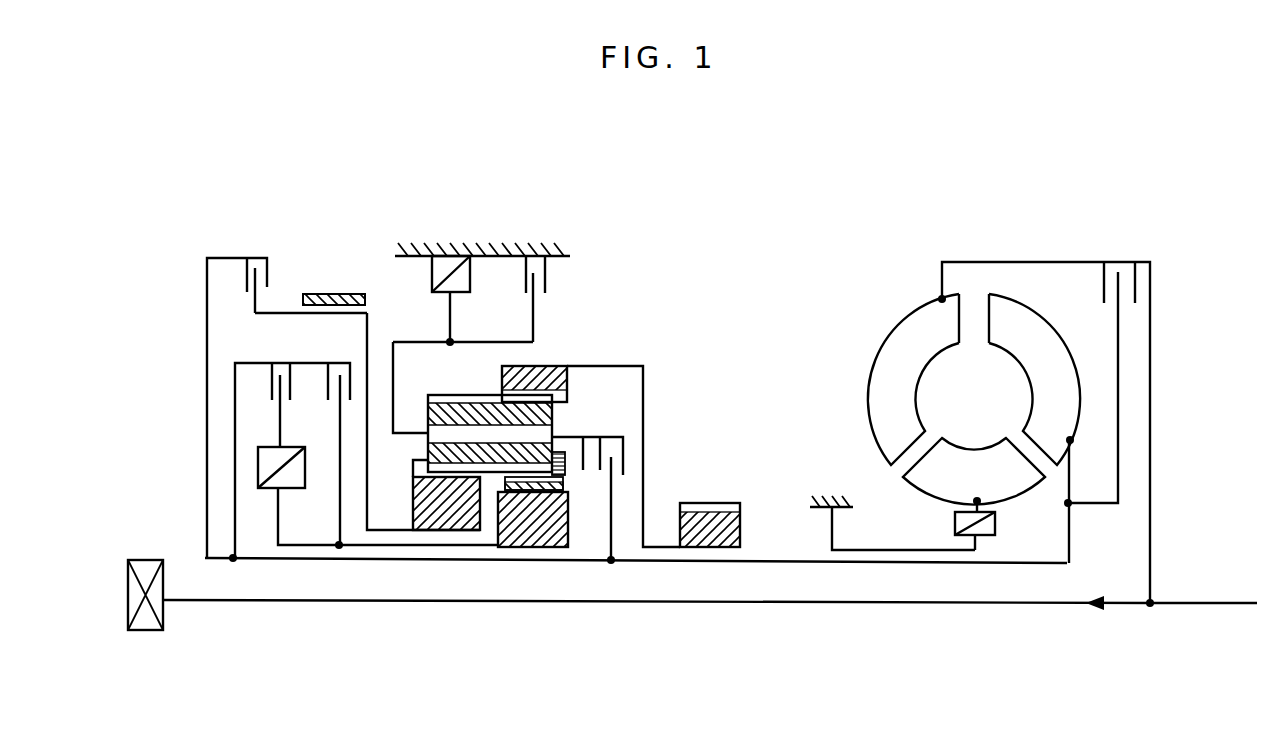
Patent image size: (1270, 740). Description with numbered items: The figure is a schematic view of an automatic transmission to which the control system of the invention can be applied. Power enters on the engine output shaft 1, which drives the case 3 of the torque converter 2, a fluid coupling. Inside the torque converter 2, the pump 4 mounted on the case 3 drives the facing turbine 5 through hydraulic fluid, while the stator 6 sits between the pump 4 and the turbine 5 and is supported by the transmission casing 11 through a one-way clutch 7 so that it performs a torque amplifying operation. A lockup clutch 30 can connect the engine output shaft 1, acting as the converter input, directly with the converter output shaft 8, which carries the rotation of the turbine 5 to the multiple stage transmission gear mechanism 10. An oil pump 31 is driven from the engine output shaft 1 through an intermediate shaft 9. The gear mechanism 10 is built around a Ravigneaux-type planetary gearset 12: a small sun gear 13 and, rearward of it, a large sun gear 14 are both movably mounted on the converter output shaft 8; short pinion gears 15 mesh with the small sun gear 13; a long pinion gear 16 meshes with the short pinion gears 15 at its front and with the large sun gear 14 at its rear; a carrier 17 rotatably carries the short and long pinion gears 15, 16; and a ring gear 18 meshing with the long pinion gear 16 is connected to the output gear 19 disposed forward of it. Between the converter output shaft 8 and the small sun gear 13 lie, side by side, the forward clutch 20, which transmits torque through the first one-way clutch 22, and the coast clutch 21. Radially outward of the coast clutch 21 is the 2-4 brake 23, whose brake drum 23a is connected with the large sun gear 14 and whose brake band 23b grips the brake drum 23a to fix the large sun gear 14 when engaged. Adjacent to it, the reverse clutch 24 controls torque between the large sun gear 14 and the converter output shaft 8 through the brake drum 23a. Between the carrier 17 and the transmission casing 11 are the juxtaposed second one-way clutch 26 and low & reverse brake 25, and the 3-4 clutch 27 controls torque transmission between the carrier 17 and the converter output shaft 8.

The engine output shaft 1 is at (1207, 605).
The torque converter 2 is at (951, 405).
The case 3 is at (1020, 262).
The pump 4 is at (868, 370).
The turbine 5 is at (1040, 318).
The stator 6 is at (920, 488).
The one-way clutch 7 is at (955, 525).
The converter output shaft 8 is at (415, 561).
The intermediate shaft 9 is at (695, 605).
The multiple stage transmission gear mechanism 10 is at (585, 255).
The transmission casing 11 is at (462, 250).
The Ravigneaux-type planetary gearset 12 is at (638, 362).
The small sun gear 13 is at (535, 545).
The large sun gear 14 is at (420, 503).
The short pinion gears 15 is at (558, 470).
The long pinion gear 16 is at (428, 447).
The carrier 17 is at (580, 437).
The ring gear 18 is at (546, 366).
The output gear 19 is at (740, 528).
The forward clutch 20 is at (268, 381).
The coast clutch 21 is at (326, 383).
The first one-way clutch 22 is at (306, 474).
The 2-4 brake 23 is at (334, 247).
The brake drum 23a is at (338, 312).
The brake band 23b is at (305, 292).
The reverse clutch 24 is at (246, 256).
The low & reverse brake 25 is at (513, 270).
The second one-way clutch 26 is at (432, 284).
The 3-4 clutch 27 is at (626, 455).
The lockup clutch 30 is at (1100, 285).
The oil pump 31 is at (165, 618).